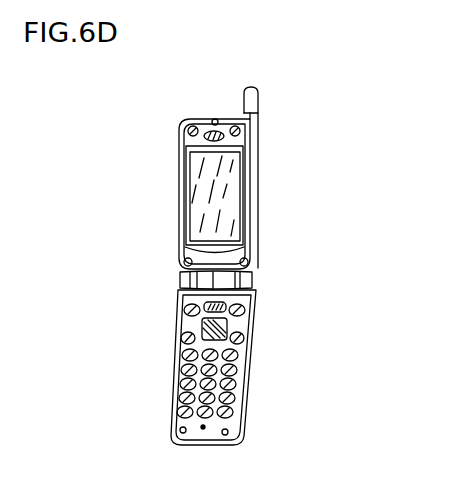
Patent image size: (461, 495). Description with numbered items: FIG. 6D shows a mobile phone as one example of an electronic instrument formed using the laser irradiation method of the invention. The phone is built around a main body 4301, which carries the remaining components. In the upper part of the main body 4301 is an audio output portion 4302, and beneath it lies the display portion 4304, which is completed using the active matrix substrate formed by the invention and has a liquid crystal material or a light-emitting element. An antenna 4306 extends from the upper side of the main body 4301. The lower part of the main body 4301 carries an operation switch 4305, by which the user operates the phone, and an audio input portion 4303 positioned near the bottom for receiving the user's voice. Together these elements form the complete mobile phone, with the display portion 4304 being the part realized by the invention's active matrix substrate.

The main body 4301 is at (178, 348).
The audio output portion 4302 is at (183, 121).
The audio input portion 4303 is at (203, 427).
The display portion 4304 is at (287, 212).
The operation switch 4305 is at (236, 343).
The antenna 4306 is at (258, 100).